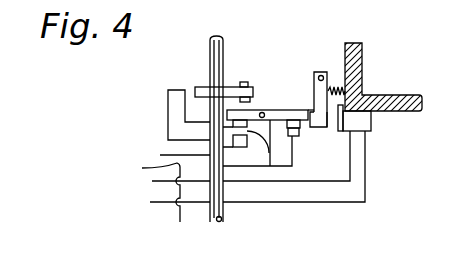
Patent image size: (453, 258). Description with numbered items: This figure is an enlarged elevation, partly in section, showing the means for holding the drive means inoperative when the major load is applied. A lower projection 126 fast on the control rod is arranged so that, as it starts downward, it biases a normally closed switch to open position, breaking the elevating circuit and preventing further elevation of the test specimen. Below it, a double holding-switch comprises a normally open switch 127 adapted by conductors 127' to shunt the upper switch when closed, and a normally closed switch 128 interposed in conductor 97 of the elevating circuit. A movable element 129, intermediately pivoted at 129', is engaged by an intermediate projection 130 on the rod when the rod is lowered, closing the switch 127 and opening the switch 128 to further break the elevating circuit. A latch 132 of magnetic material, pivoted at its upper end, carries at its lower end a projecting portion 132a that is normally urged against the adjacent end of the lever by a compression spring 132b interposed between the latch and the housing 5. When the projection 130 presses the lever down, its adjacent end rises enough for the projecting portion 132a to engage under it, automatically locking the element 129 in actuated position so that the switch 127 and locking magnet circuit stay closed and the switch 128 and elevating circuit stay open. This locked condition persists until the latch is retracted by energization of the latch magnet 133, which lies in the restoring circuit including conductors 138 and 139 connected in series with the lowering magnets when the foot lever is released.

The housing 5 is at (362, 49).
The conductor 97 is at (170, 157).
The lower projection 126 is at (274, 107).
The normally open switch 127 is at (246, 143).
The conductors 127' is at (156, 109).
The normally closed switch 128 is at (286, 140).
The movable element 129 is at (270, 102).
The pivot 129' is at (275, 89).
The intermediate projection 130 is at (226, 86).
The latch 132 is at (362, 72).
The projecting portion 132a is at (319, 128).
The compression spring 132b is at (347, 91).
The latch magnet 133 is at (358, 116).
The conductor 138 is at (339, 182).
The conductor 139 is at (321, 203).